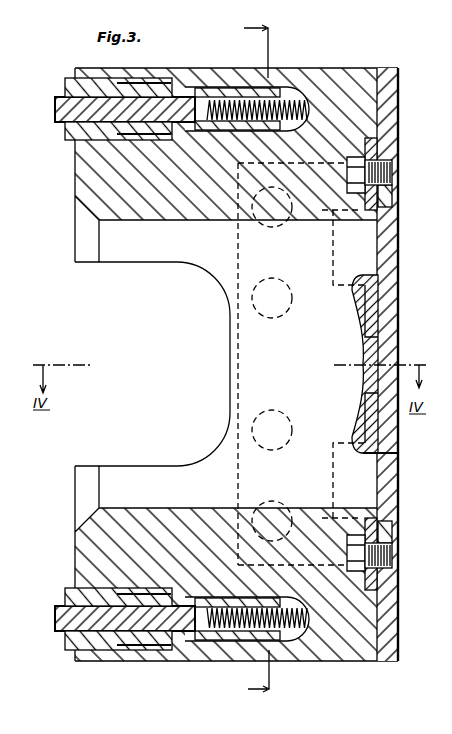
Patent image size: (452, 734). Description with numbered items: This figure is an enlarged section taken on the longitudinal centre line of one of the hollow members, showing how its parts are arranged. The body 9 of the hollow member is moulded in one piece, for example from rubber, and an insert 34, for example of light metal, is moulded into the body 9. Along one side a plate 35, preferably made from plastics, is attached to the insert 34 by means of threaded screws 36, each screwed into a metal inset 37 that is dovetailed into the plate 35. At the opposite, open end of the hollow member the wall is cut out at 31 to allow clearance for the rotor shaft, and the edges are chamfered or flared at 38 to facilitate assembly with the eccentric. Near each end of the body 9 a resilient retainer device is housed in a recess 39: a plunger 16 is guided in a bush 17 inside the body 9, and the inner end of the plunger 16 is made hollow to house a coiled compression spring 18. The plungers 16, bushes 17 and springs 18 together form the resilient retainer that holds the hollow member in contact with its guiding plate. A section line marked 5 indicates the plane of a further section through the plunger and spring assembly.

The section line V-V 5 is at (256, 361).
The body 9 is at (356, 75).
The plunger 16 is at (173, 103).
The bush 17 is at (86, 89).
The coiled compression spring 18 is at (289, 100).
The cut-out 31 is at (175, 263).
The insert 34 is at (230, 374).
The plate 35 is at (389, 112).
The threaded screw 36 is at (383, 174).
The metal inset 37 is at (390, 194).
The chamfer 38 is at (88, 211).
The recess 39 is at (189, 640).